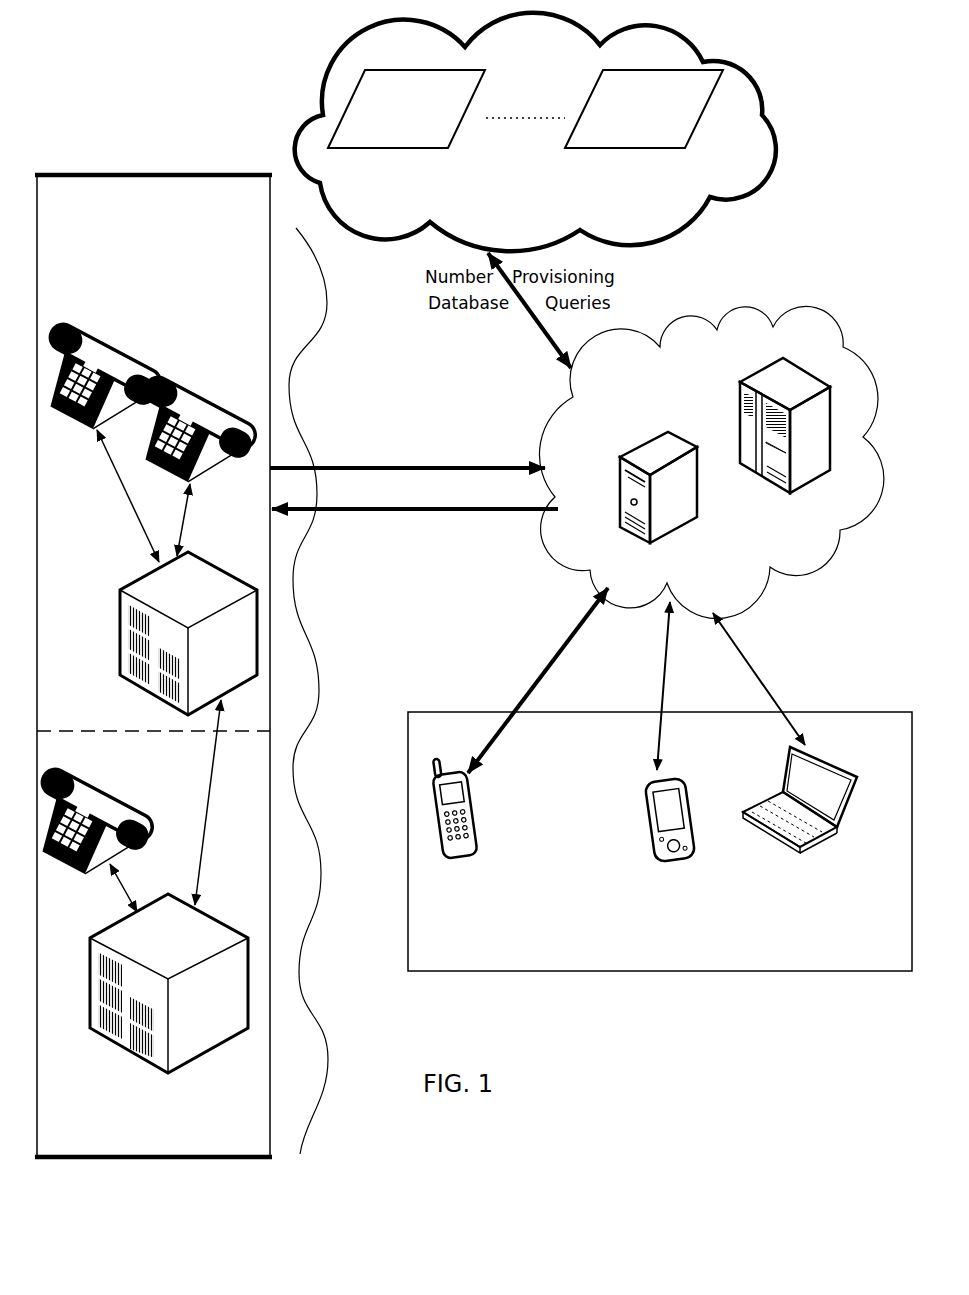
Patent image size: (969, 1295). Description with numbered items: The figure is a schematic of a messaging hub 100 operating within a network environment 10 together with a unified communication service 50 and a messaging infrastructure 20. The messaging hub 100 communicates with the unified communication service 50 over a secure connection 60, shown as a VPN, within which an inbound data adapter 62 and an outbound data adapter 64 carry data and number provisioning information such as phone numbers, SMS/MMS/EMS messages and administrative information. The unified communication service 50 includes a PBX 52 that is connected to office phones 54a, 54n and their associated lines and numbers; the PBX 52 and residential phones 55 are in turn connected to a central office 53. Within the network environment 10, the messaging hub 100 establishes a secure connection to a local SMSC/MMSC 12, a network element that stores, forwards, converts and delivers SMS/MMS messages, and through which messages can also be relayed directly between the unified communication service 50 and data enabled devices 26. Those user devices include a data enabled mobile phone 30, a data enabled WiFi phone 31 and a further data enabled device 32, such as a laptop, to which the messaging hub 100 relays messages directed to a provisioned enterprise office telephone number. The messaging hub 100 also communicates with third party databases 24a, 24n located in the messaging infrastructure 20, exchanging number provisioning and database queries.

The network environment 10 is at (757, 292).
The local SMSC/MMSC 12 is at (746, 411).
The messaging infrastructure 20 is at (535, 132).
The third party database 24a is at (406, 109).
The third party database 24n is at (644, 109).
The data enabled devices 26 is at (660, 841).
The data enabled mobile phone 30 is at (472, 785).
The data enabled WiFi phone 31 is at (685, 785).
The laptop computer 32 is at (835, 760).
The unified communication service 50 is at (142, 666).
The PBX 52 is at (188, 633).
The central office 53 is at (169, 983).
The office phone 54a is at (121, 332).
The office phone 54n is at (182, 375).
The residential phones 55 is at (112, 780).
The secure connection 60 is at (414, 496).
The inbound data adapter 62 is at (490, 466).
The outbound data adapter 64 is at (376, 516).
The messaging hub 100 is at (662, 428).